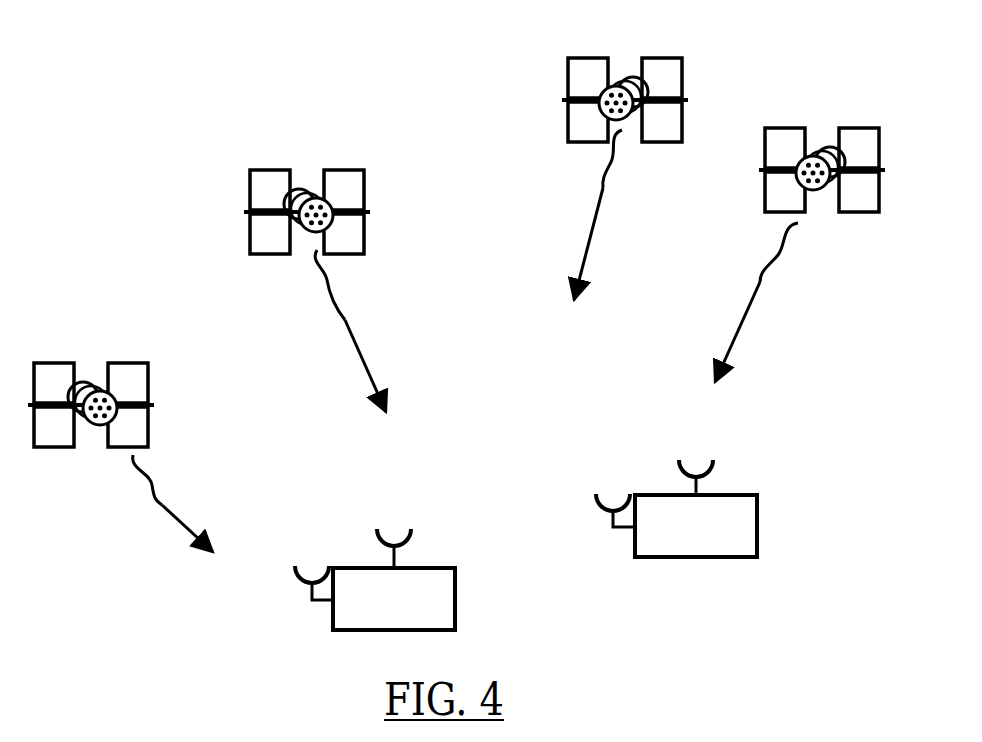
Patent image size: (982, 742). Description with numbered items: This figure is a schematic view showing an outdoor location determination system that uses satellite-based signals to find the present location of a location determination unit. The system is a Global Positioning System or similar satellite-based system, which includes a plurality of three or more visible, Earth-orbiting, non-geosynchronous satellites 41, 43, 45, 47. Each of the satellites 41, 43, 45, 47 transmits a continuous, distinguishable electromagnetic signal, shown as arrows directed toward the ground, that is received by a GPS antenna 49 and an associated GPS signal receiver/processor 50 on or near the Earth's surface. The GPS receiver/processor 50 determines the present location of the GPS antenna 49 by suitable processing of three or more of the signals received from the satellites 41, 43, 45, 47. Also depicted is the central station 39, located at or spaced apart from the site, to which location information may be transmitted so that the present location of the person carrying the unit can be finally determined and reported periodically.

The central processing station 39 is at (712, 505).
The GPS satellite 41 is at (305, 200).
The GPS satellite 43 is at (624, 88).
The GPS satellite 45 is at (818, 158).
The GPS satellite 47 is at (97, 395).
The GPS antenna 49 is at (408, 538).
The GPS signal receiver/processor 50 is at (397, 558).